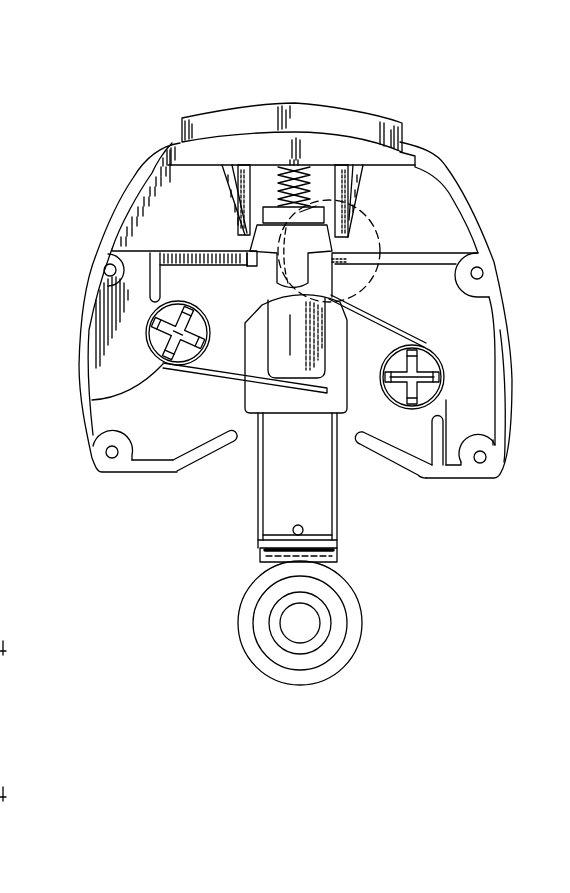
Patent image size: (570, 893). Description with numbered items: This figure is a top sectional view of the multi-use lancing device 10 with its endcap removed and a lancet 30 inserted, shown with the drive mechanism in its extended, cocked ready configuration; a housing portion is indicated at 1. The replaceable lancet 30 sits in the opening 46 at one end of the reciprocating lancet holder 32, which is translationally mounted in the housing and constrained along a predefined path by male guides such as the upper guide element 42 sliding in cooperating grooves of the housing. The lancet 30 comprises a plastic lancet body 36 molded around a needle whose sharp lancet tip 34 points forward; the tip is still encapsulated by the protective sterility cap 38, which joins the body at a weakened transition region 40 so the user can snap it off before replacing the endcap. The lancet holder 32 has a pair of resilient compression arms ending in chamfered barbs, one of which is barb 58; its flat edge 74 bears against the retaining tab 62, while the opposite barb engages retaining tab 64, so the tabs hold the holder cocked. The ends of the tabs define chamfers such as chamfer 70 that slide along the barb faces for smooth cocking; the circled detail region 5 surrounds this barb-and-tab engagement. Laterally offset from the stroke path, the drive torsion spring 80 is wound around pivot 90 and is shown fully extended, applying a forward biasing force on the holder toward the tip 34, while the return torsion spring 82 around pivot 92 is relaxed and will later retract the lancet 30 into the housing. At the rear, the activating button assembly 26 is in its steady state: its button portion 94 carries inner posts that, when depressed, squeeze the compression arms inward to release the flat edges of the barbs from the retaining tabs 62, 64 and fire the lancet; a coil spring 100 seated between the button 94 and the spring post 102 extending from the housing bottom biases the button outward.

The housing 1 is at (467, 347).
The detail region 5 is at (378, 223).
The lancing device 10 is at (225, 706).
The activating button assembly 26 is at (311, 91).
The lancet 30 is at (307, 497).
The lancet holder 32 is at (263, 397).
The lancet tip 34 is at (305, 562).
The lancet body 36 is at (262, 490).
The protective sterility cap 38 is at (302, 617).
The transition region 40 is at (280, 554).
The upper guide element 42 is at (340, 447).
The opening 46 is at (288, 419).
The chamfered barb 58 is at (275, 206).
The retaining tab 62 is at (248, 247).
The retaining tab 64 is at (353, 262).
The chamfer 70 is at (254, 270).
The flat edge 74 is at (263, 210).
The drive spring 80 is at (428, 345).
The return spring 82 is at (92, 400).
The pivot 90 is at (447, 377).
The pivot 92 is at (148, 335).
The button portion 94 is at (350, 155).
The coil spring 100 is at (312, 186).
The spring post 102 is at (153, 165).